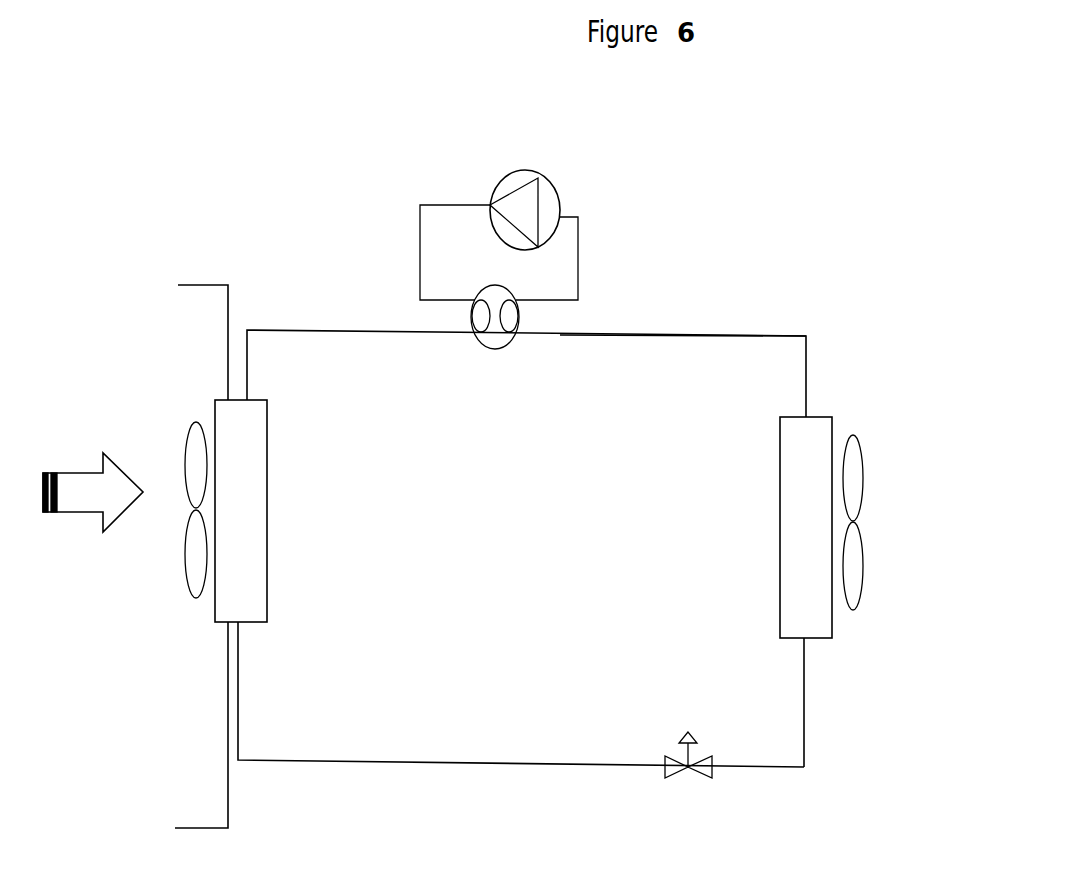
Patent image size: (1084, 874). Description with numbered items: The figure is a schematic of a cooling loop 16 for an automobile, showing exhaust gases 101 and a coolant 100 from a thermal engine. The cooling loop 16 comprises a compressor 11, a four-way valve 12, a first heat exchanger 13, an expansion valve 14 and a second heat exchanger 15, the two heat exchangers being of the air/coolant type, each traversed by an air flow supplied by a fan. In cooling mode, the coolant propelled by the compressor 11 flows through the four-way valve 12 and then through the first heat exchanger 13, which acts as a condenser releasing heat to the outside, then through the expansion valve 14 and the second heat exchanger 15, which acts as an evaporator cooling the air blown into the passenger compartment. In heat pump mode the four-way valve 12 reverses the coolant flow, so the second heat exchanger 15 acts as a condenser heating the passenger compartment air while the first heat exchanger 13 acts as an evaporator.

The compressor 11 is at (584, 183).
The four-way valve 12 is at (519, 361).
The first heat exchanger 13 is at (287, 629).
The expansion valve 14 is at (729, 793).
The second heat exchanger 15 is at (849, 635).
The cooling loop 16 is at (726, 320).
The coolant 100 is at (236, 301).
The exhaust gases 101 is at (61, 430).